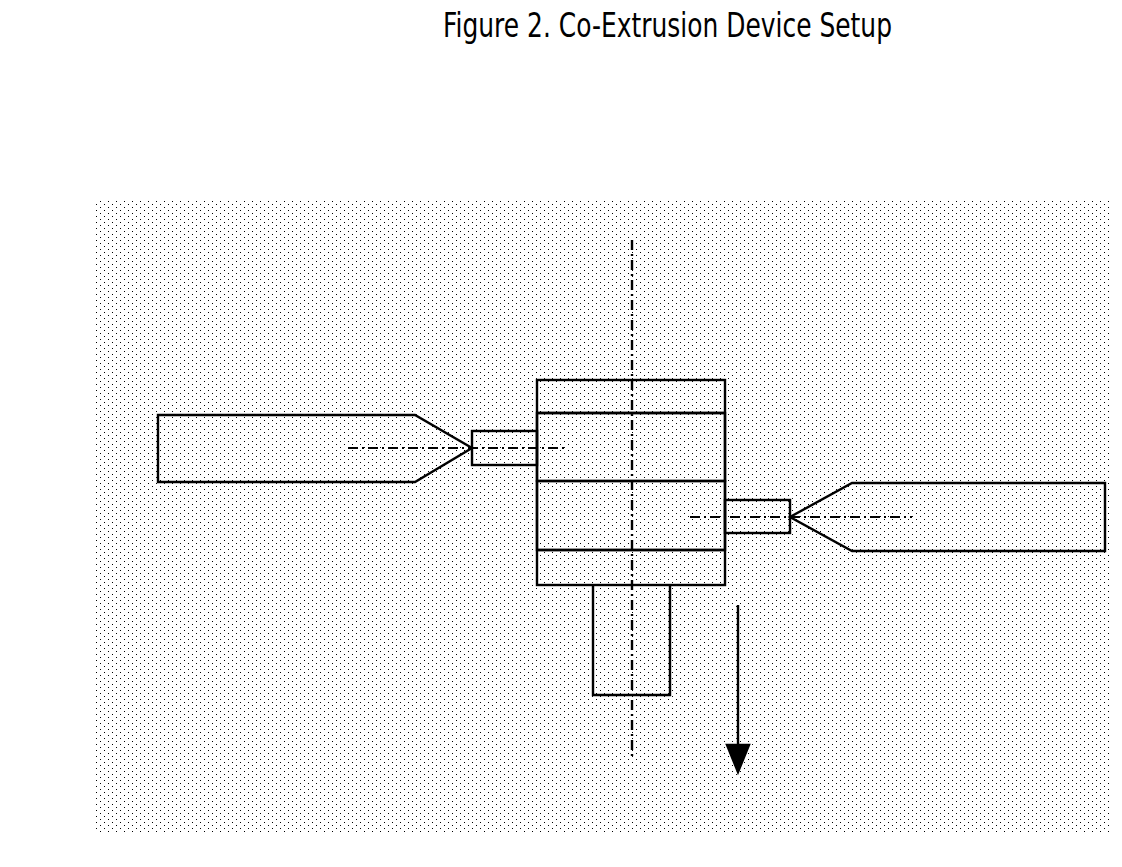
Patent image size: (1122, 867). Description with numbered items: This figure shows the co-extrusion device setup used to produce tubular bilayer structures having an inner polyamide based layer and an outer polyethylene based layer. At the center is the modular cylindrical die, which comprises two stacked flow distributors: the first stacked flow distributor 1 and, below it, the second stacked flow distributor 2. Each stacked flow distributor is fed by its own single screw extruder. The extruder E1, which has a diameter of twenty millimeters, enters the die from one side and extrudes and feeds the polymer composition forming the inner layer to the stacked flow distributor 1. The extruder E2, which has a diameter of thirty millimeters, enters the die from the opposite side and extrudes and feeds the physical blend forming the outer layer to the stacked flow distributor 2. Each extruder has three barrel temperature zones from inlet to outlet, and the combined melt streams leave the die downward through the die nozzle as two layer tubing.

The stacked flow distributor SFD1 1 is at (631, 447).
The stacked flow distributor SFD2 2 is at (631, 515).
The extruder E1 is at (363, 448).
The extruder E2 is at (897, 517).